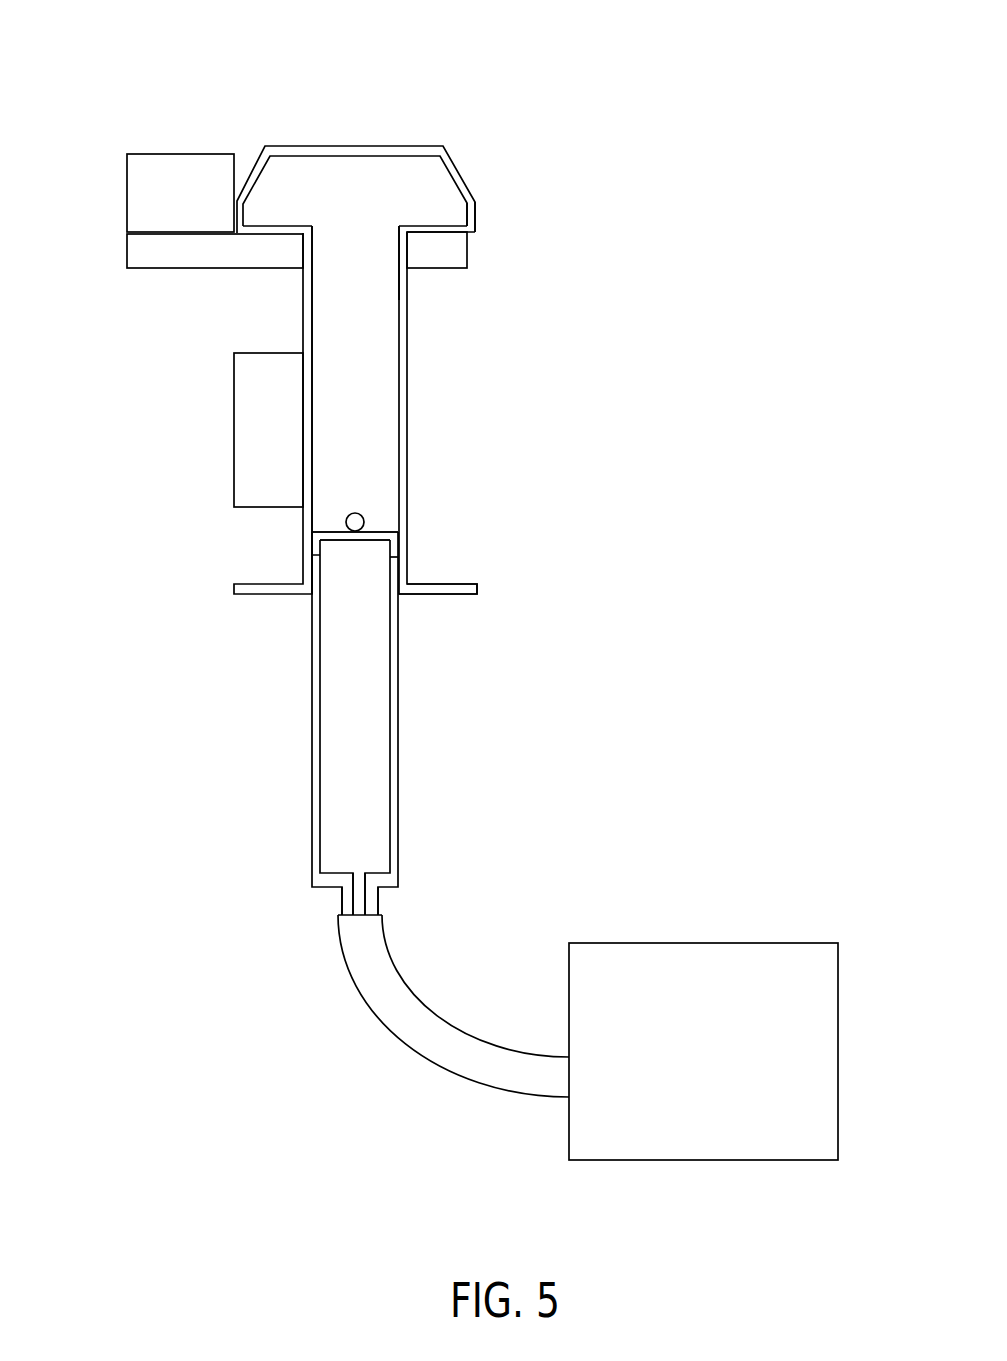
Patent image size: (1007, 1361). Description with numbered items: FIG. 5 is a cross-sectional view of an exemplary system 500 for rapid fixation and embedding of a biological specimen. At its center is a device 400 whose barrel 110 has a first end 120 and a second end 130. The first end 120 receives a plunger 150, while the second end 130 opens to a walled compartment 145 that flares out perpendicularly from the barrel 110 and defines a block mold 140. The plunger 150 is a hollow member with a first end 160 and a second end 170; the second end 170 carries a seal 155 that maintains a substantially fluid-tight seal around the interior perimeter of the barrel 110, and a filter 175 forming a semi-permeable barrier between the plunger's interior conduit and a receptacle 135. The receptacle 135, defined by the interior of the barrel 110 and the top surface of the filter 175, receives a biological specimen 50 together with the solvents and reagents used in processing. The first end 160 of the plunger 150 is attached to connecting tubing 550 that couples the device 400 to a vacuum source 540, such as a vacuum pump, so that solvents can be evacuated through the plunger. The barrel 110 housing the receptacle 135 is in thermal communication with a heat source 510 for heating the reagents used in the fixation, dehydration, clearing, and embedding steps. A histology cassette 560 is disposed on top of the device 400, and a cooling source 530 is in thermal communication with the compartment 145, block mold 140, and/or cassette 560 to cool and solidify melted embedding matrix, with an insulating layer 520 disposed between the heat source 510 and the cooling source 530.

The system 500 is at (665, 72).
The histology cassette 560 is at (458, 165).
The walled compartment 145 is at (477, 213).
The block mold 140 is at (455, 212).
The insulating layer 520 is at (468, 248).
The cooling source 530 is at (132, 190).
The heat source 510 is at (233, 400).
The barrel 110 is at (407, 385).
The receptacle 135 is at (388, 315).
The second end of the barrel 130 is at (410, 243).
The first end of the barrel 120 is at (467, 578).
The biological specimen 50 is at (357, 513).
The device 400 is at (510, 643).
The plunger 150 is at (398, 733).
The filter 175 is at (398, 532).
The second end of the plunger 170 is at (392, 552).
The seal 155 is at (392, 560).
The first end of the plunger 160 is at (378, 915).
The connecting tubing 550 is at (483, 1087).
The vacuum source 540 is at (716, 1069).